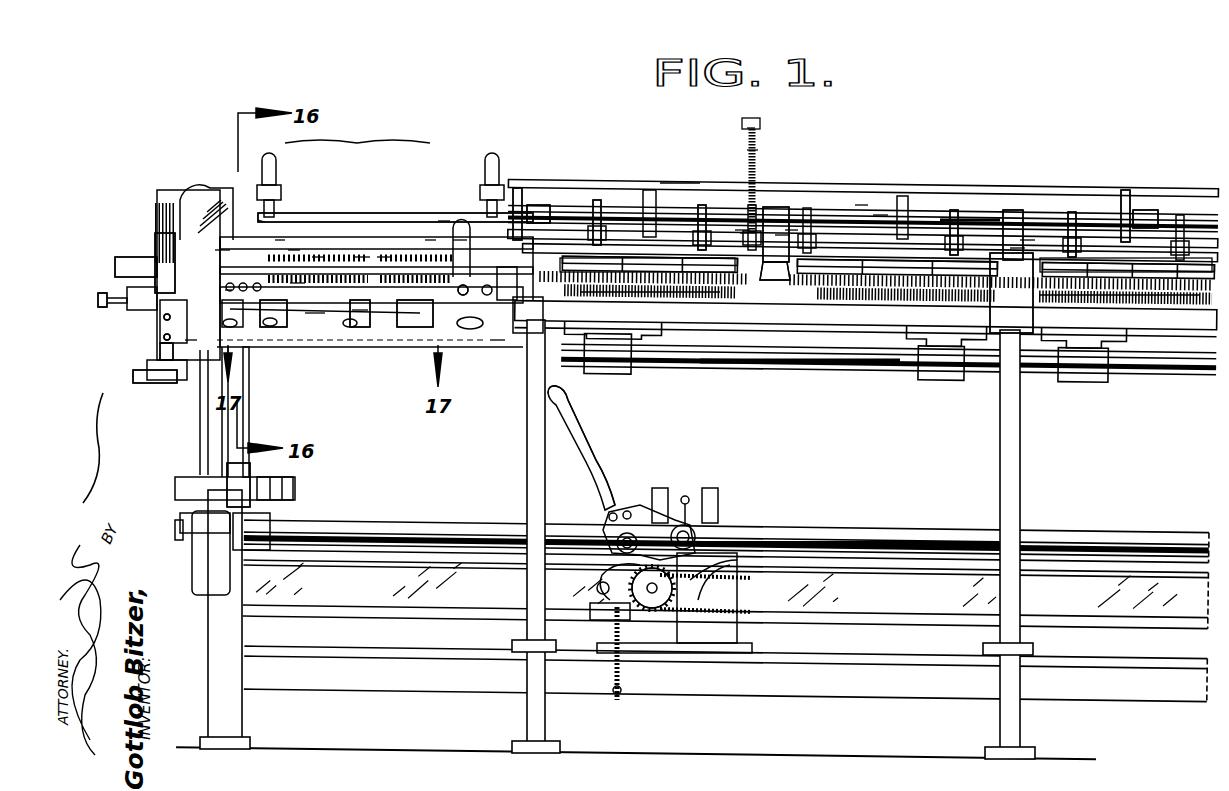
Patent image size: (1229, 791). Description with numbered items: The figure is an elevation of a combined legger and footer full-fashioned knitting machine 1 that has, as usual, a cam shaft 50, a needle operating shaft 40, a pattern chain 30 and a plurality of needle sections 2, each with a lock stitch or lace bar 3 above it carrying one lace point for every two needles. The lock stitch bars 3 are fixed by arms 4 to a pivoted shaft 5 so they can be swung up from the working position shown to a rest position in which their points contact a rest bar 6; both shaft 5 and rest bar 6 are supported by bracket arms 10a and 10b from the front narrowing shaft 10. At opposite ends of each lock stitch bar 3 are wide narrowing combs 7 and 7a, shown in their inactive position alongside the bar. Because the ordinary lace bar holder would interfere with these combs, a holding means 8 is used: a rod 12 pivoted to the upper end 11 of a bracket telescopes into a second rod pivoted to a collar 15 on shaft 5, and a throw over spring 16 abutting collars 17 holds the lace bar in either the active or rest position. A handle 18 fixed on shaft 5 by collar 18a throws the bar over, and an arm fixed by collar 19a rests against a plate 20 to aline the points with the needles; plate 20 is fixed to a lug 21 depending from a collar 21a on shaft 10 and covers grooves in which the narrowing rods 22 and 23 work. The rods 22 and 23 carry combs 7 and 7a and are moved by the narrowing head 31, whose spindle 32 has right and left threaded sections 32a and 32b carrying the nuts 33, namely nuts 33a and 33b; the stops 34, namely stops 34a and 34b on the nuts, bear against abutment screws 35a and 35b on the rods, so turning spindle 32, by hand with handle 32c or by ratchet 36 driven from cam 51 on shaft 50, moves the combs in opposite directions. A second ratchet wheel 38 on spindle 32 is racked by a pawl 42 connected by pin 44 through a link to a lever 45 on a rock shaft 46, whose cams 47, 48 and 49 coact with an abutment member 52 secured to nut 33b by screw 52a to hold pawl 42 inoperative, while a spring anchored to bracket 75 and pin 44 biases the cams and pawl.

The knitting machine 1 is at (82, 448).
The needle section 2 is at (673, 290).
The lock stitch bar 3 is at (612, 257).
The arm 4 is at (595, 200).
The pivoted shaft 5 is at (1087, 237).
The rest bar 6 is at (682, 186).
The narrowing comb 7 is at (747, 268).
The narrowing comb 7a is at (540, 265).
The holding means 8 is at (752, 120).
The front narrowing shaft 10 is at (970, 217).
The bracket arm 10a is at (530, 213).
The bracket arm 10b is at (515, 200).
The upper end of bracket 11 is at (758, 134).
The rod 12 is at (742, 124).
The collar 15 is at (743, 230).
The throw over spring 16 is at (757, 153).
The collar 17 is at (747, 233).
The handle 18 is at (880, 215).
The collar 18a is at (862, 205).
The collar 19a is at (782, 233).
The plate 20 is at (790, 230).
The lug 21 is at (777, 268).
The collar 21a is at (772, 220).
The narrowing rod 22 is at (460, 240).
The narrowing rod 23 is at (443, 220).
The pattern chain 30 is at (708, 614).
The narrowing head 31 is at (250, 523).
The narrowing spindle 32 is at (363, 257).
The threaded section 32a is at (383, 257).
The threaded section 32b is at (318, 257).
The handle 32c is at (103, 307).
The slide plate 33 is at (297, 285).
The nut 33a is at (190, 342).
The nut 33b is at (223, 250).
The bar 34 is at (360, 312).
The stop 34a is at (463, 296).
The stop 34b is at (258, 217).
The abutment screw 35a is at (430, 240).
The abutment screw 35b is at (280, 240).
The ratchet wheel 36 is at (147, 262).
The second ratchet wheel 38 is at (157, 247).
The needle operating shaft 40 is at (797, 358).
The second pawl 42 is at (160, 353).
The pin 44 is at (165, 337).
The lever 45 is at (165, 317).
The shaft 46 is at (315, 314).
The cam 47 is at (270, 327).
The cam 48 is at (352, 327).
The cam 49 is at (404, 327).
The cam shaft 50 is at (842, 530).
The cam 51 is at (357, 130).
The abutment member 52 is at (395, 217).
The screw 52a is at (293, 250).
The bracket 75 is at (157, 380).